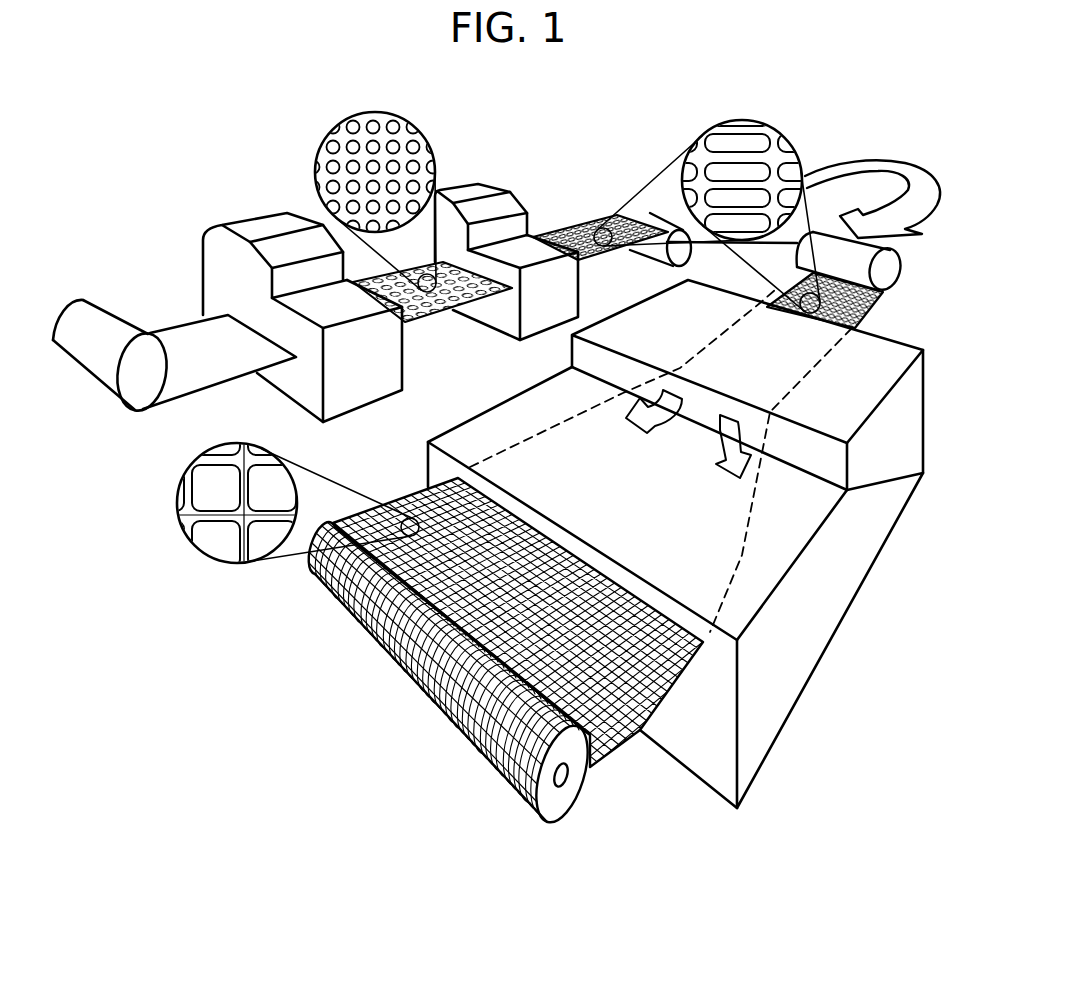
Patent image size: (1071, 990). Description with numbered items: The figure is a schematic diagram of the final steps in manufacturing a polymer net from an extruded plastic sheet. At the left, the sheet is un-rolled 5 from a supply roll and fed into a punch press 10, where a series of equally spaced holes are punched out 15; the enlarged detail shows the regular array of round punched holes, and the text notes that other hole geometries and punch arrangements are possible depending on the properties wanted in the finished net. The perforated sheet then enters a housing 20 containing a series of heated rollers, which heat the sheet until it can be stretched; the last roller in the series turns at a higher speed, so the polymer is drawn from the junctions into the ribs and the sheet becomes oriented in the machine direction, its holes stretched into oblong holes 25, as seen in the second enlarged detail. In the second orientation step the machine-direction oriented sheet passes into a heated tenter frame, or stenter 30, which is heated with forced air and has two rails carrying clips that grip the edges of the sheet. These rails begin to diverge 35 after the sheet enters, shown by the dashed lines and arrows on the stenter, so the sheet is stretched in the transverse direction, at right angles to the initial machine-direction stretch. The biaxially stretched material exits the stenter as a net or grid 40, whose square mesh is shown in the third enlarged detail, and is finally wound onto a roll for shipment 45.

The un-rolled sheet 5 is at (108, 333).
The punch press 10 is at (297, 380).
The punched holes 15 is at (336, 127).
The housing with heated rollers 20 is at (500, 313).
The oblong holes of MD oriented sheet 25 is at (712, 130).
The heated tenter frame (stenter) 30 is at (808, 650).
The diverging rails 35 is at (552, 418).
The net or grid 40 is at (620, 743).
The roll for shipment 45 is at (443, 700).